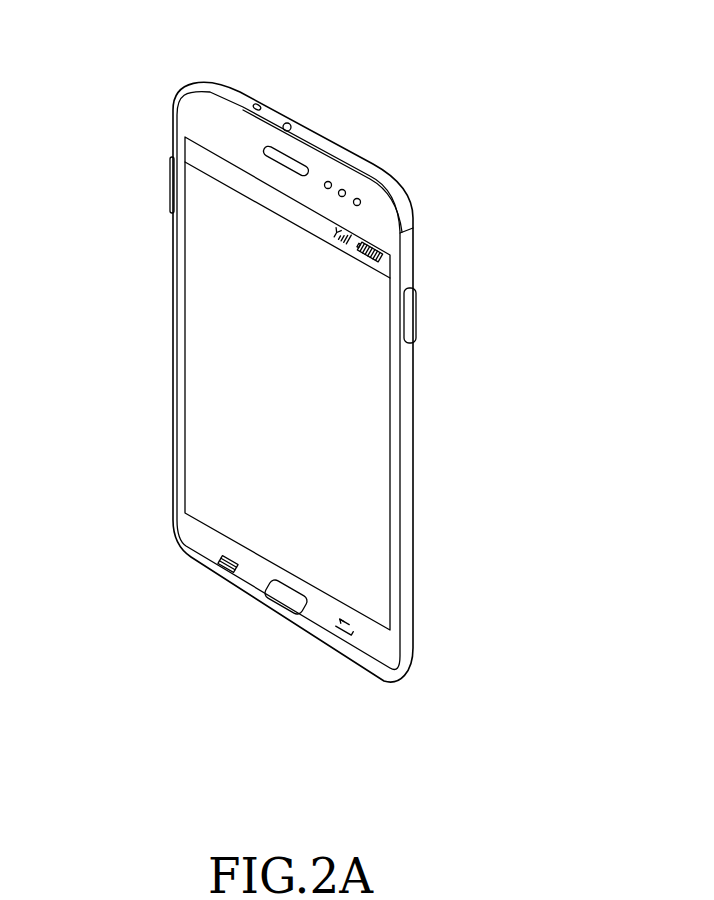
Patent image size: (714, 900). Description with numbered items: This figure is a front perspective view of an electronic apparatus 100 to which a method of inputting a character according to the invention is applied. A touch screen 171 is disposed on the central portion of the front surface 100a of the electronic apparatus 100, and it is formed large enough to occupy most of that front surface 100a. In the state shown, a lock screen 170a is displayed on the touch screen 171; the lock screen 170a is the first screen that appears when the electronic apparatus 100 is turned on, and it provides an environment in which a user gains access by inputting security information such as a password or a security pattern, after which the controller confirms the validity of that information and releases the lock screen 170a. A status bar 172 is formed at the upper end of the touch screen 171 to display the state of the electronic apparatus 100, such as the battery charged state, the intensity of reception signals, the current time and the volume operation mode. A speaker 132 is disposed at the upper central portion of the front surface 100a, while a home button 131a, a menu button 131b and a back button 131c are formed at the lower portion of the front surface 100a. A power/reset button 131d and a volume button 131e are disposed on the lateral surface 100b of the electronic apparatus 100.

The electronic apparatus 100 is at (148, 52).
The front surface 100a is at (190, 118).
The lateral surface 100b is at (405, 420).
The speaker 132 is at (291, 160).
The lock screen 170a is at (207, 353).
The touch screen 171 is at (355, 233).
The status bar 172 is at (193, 153).
The home button 131a is at (288, 596).
The menu button 131b is at (213, 556).
The back button 131c is at (347, 630).
The power/reset button 131d is at (418, 316).
The volume button 131e is at (170, 180).